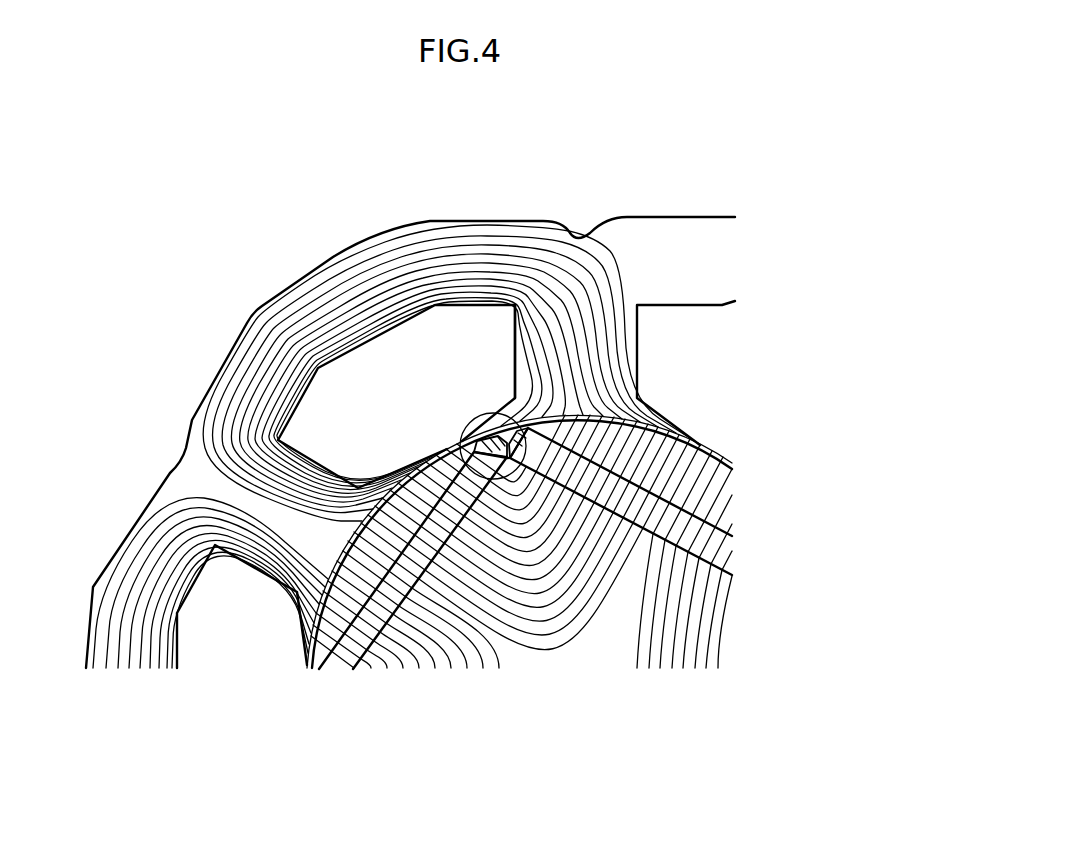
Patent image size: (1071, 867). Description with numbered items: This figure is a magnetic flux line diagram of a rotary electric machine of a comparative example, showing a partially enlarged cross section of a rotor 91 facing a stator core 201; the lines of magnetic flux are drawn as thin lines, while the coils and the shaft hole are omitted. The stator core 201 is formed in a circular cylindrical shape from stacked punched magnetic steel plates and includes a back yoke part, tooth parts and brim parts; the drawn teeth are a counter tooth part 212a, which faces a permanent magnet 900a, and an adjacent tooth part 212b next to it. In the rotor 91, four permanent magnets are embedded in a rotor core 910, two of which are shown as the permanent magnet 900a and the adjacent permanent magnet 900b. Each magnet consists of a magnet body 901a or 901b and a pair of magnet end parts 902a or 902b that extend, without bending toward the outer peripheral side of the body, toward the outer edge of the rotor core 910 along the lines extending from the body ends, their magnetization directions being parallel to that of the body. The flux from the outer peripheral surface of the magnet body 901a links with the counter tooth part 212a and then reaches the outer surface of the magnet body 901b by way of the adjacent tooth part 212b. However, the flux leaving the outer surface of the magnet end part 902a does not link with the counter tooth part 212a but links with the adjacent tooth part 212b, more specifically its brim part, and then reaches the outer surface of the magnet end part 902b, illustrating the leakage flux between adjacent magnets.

The stator core 201 is at (410, 433).
The counter tooth part 212a is at (251, 566).
The adjacent tooth part 212b is at (513, 342).
The rotor 91 is at (576, 565).
The rotor core 910 is at (719, 454).
The permanent magnet 900a is at (409, 591).
The permanent magnet 900b is at (627, 465).
The magnet body 901a is at (407, 642).
The magnet body 901b is at (722, 519).
The magnet end part 902a is at (463, 455).
The magnet end part 902b is at (517, 422).